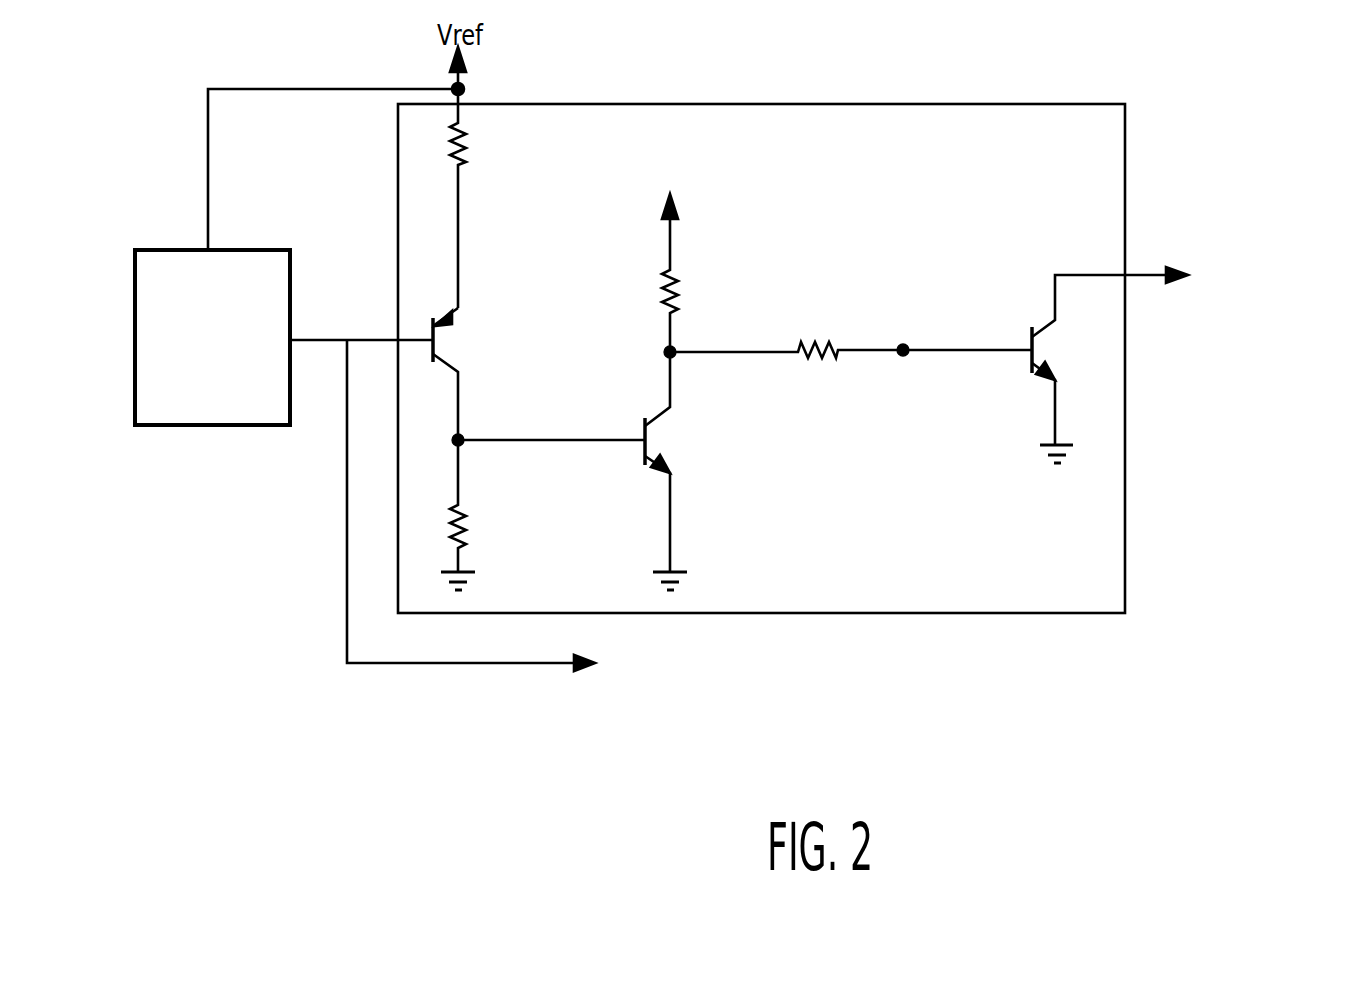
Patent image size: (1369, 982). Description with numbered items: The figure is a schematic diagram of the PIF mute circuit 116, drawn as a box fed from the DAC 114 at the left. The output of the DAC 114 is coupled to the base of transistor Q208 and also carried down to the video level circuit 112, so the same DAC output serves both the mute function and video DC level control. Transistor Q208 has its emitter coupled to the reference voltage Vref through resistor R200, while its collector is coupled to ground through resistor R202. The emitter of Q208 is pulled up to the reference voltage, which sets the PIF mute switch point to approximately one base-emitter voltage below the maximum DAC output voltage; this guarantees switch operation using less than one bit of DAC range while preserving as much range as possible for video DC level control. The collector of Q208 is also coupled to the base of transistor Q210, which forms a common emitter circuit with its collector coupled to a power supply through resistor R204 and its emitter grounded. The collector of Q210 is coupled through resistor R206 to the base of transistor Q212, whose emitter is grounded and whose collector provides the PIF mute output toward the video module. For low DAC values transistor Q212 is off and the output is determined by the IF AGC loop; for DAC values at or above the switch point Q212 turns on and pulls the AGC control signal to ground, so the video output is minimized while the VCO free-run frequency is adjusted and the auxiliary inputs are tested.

The video level circuit 112 is at (886, 660).
The DAC 114 is at (200, 425).
The PIF mute circuit 116 is at (1035, 613).
The resistor R200 is at (489, 198).
The resistor R202 is at (485, 515).
The resistor R204 is at (701, 273).
The resistor R206 is at (851, 368).
The transistor Q208 is at (397, 374).
The transistor Q210 is at (589, 471).
The transistor Q212 is at (1177, 355).